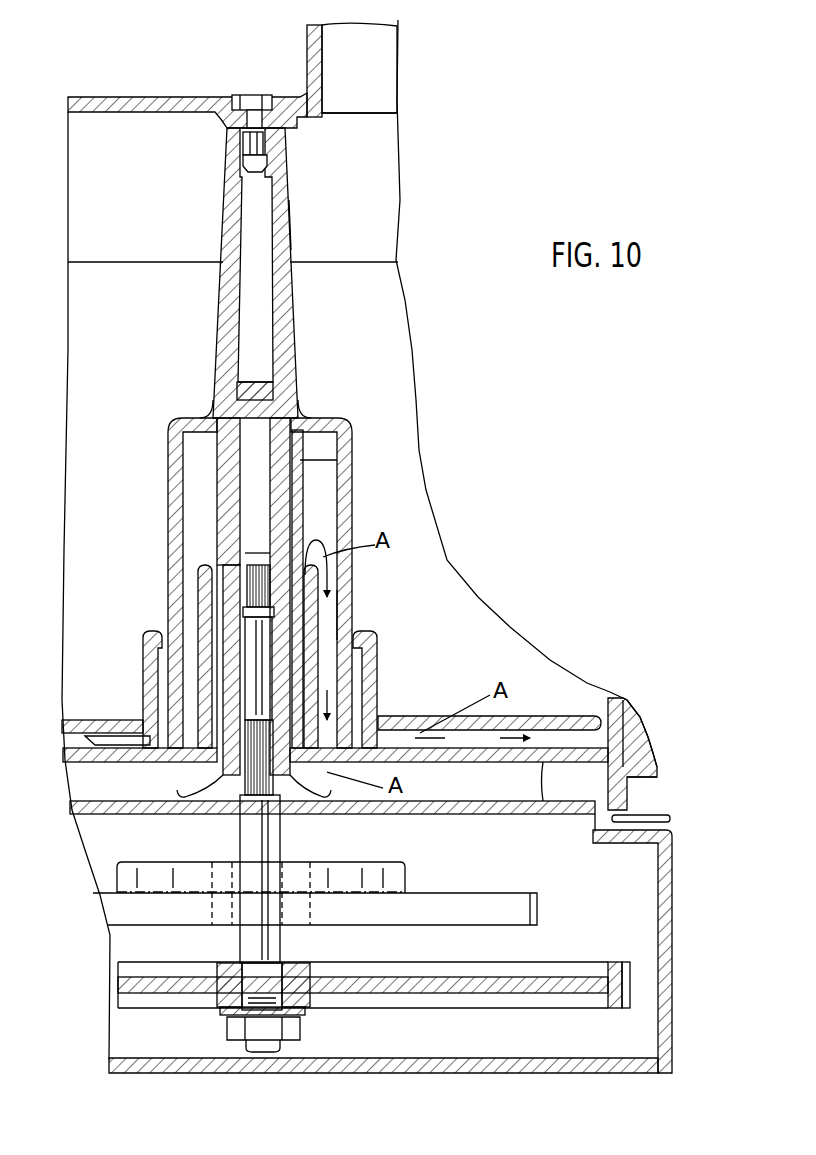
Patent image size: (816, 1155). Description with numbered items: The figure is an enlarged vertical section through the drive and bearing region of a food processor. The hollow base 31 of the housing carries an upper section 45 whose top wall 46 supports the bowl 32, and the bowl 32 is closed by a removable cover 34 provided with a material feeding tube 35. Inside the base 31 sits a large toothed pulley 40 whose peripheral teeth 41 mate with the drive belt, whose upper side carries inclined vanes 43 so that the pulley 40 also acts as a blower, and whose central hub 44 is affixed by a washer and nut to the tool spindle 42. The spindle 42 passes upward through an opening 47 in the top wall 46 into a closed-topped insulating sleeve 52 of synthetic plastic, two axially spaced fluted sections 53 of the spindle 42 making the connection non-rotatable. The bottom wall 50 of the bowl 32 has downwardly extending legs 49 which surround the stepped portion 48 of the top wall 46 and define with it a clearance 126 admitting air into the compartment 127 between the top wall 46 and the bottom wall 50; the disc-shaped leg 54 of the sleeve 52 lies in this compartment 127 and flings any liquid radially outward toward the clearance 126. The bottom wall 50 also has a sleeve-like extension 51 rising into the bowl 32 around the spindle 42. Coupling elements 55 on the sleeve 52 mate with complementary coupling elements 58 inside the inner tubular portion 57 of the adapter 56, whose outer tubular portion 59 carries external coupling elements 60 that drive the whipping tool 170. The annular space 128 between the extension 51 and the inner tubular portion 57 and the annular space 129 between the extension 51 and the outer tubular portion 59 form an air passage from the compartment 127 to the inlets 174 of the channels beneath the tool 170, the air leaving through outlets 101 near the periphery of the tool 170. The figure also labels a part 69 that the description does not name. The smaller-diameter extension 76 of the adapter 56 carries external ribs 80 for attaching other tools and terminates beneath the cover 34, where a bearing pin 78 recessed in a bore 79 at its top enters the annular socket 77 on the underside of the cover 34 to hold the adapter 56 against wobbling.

The hollow base 31 is at (672, 945).
The bowl 32 is at (487, 633).
The cover 34 is at (150, 97).
The material feeding tube 35 is at (305, 60).
The second pulley 40 is at (506, 985).
The teeth 41 is at (630, 995).
The tool spindle 42 is at (283, 838).
The vanes 43 is at (426, 963).
The hub 44 is at (302, 1000).
The upper section 45 is at (672, 865).
The top wall 46 is at (502, 815).
The opening 47 is at (238, 808).
The stepped portion 48 is at (597, 835).
The legs 49 is at (628, 793).
The bottom wall 50 is at (543, 815).
The sleeve-like extension 51 is at (313, 580).
The insulating sleeve 52 is at (237, 563).
The fluted sections 53 is at (250, 592).
The disc-shaped leg 54 is at (185, 797).
The coupling elements 55 is at (300, 472).
The adapter 56 is at (365, 512).
The inner tubular portion 57 is at (217, 492).
The coupling elements 58 is at (300, 453).
The outer tubular portion 59 is at (352, 608).
The external coupling elements 60 is at (364, 690).
The seal 69 is at (150, 631).
The extension 76 is at (283, 300).
The female bearing portion 77 is at (222, 112).
The bearing pin 78 is at (264, 143).
The bore 79 is at (266, 168).
The external ribs 80 is at (291, 228).
The outlets 101 is at (582, 735).
The clearance 126 is at (645, 818).
The compartment 127 is at (588, 780).
The annular space 128 is at (326, 630).
The annular space 129 is at (332, 660).
The whipping tool 170 is at (549, 712).
The inlets 174 is at (403, 714).